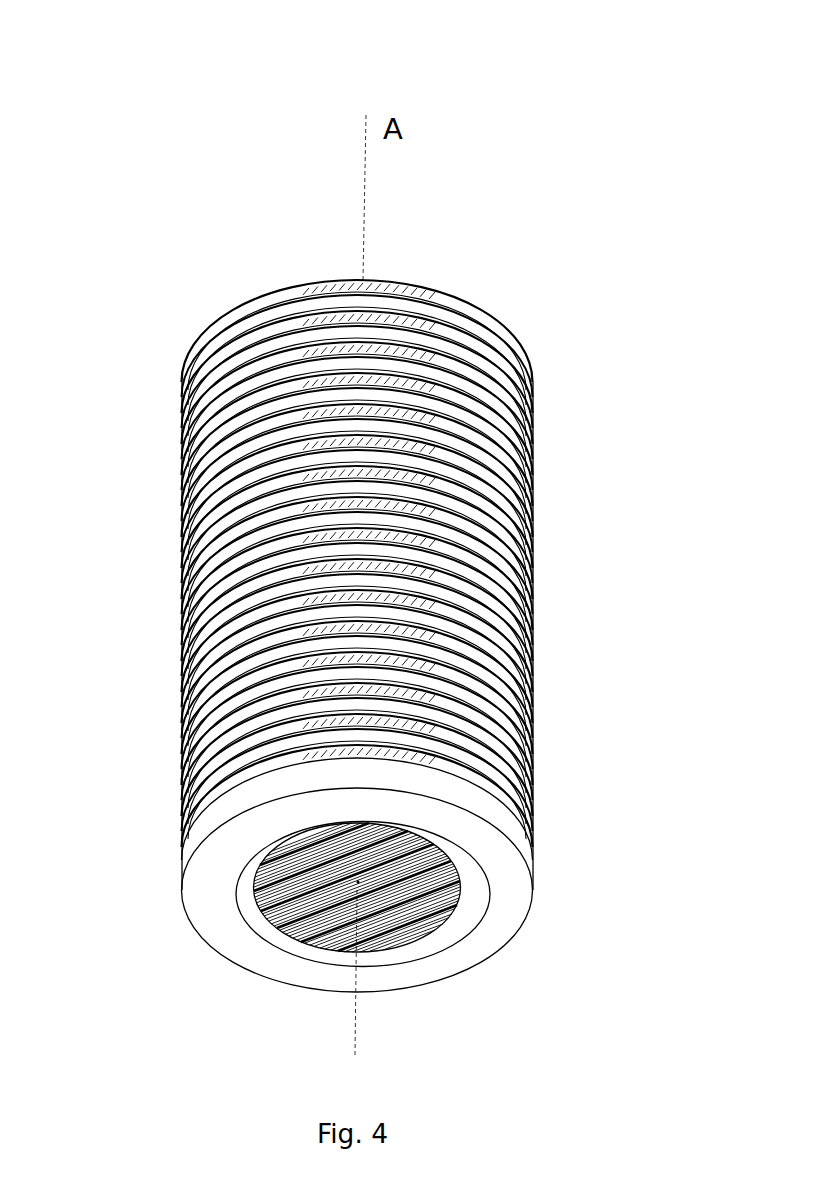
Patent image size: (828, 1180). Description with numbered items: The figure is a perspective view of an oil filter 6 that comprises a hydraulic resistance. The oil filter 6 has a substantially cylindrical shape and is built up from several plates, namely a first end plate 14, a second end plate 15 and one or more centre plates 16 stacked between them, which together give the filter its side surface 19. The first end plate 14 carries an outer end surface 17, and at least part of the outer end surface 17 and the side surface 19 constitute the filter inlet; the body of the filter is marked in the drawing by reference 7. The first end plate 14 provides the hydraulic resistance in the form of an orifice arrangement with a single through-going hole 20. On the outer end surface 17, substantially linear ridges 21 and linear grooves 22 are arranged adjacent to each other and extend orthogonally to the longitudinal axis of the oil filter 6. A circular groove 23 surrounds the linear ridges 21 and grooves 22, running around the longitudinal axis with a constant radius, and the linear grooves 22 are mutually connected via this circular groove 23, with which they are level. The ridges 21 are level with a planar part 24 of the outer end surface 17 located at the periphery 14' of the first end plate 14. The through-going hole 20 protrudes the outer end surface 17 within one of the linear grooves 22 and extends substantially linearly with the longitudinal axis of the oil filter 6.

The oil filter 6 is at (198, 110).
The sleeve body 7 is at (535, 490).
The first end plate 14 is at (426, 815).
The periphery of the end plate 14' is at (292, 889).
The second end plate 15 is at (472, 312).
The centre plate 16 is at (181, 451).
The outer end surface 17 is at (513, 910).
The side surface 19 is at (535, 568).
The through-going hole 20 is at (398, 942).
The linear ridges 21 is at (272, 936).
The linear grooves 22 is at (275, 925).
The circular groove 23 is at (310, 943).
The part of the outer end surface 24 is at (508, 870).